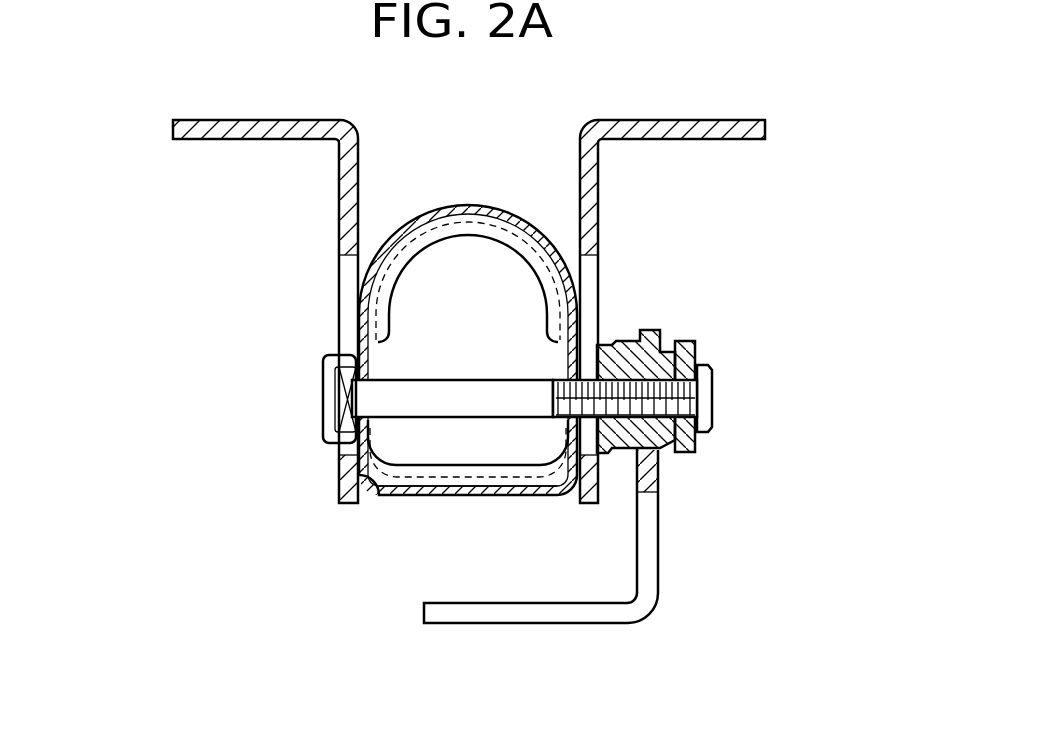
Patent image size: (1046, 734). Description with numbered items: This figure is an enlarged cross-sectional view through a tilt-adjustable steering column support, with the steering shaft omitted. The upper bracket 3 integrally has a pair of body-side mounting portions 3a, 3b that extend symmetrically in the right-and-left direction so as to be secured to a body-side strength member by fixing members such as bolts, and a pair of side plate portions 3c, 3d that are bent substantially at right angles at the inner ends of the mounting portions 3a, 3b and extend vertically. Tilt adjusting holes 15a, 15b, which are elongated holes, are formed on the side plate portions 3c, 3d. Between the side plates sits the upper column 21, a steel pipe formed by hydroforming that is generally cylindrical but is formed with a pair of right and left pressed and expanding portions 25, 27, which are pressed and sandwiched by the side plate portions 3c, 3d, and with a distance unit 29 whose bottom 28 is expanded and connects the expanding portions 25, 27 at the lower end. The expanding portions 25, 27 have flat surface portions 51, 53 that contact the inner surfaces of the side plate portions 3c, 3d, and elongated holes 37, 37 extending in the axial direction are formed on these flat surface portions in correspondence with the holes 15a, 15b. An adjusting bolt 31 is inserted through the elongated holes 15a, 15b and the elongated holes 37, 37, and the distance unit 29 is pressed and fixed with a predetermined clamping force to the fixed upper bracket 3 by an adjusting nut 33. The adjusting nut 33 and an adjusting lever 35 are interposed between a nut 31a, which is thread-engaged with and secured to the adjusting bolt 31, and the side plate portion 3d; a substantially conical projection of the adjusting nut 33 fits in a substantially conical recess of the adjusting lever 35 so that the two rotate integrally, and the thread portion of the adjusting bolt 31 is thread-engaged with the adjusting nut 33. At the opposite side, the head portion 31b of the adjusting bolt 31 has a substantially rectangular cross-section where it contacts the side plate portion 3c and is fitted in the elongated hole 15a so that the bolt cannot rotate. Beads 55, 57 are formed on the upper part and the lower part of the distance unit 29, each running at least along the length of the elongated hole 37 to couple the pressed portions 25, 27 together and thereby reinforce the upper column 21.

The upper bracket 3 is at (465, 278).
The body-side mounting portion 3a is at (295, 122).
The body-side mounting portion 3b is at (705, 122).
The side plate portion 3c is at (345, 200).
The side plate portion 3d is at (592, 180).
The tilt adjusting hole 15a is at (348, 300).
The tilt adjusting hole 15b is at (598, 278).
The upper column 21 is at (466, 346).
The pressed and expanding portion 25 is at (364, 483).
The pressed and expanding portion 27 is at (568, 478).
The bottom 28 is at (445, 470).
The distance unit 29 is at (445, 497).
The adjusting bolt 31 is at (393, 487).
The nut 31a is at (715, 460).
The head portion 31b is at (325, 382).
The adjusting nut 33 is at (612, 345).
The adjusting lever 35 is at (541, 569).
The elongated hole 37 is at (366, 392).
The flat surface portion 51 is at (340, 452).
The flat surface portion 53 is at (600, 458).
The bead 55 is at (497, 207).
The bead 57 is at (488, 494).